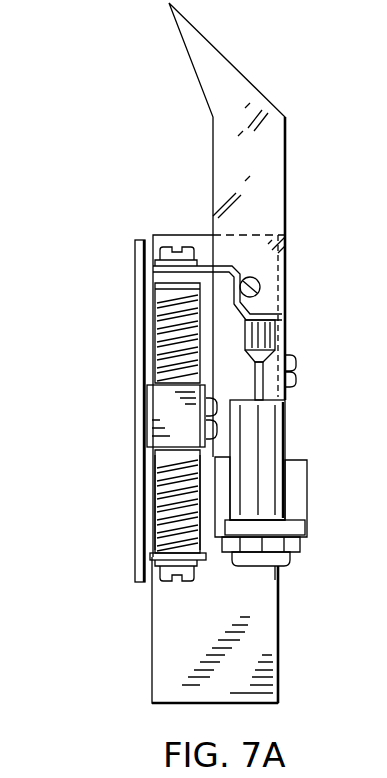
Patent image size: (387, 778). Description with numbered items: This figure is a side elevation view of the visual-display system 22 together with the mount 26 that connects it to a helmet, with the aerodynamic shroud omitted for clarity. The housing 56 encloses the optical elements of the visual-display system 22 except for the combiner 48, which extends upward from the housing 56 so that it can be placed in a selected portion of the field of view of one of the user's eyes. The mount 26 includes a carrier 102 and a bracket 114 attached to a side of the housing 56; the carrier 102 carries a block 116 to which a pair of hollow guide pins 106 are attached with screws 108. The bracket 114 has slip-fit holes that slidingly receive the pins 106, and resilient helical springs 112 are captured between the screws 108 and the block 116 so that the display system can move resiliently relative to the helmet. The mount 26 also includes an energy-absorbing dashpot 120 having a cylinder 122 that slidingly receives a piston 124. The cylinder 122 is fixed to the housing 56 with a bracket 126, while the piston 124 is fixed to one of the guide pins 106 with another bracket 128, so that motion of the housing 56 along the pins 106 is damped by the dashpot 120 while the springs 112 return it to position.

The visual-display system 22 is at (180, 226).
The mount 26 is at (133, 230).
The combiner 48 is at (242, 72).
The housing 56 is at (280, 683).
The carrier 102 is at (133, 447).
The hollow pins 106 is at (152, 540).
The screws 108 is at (168, 582).
The helical springs 112 is at (153, 513).
The bracket 114 is at (203, 557).
The block 116 is at (149, 405).
The dashpot 120 is at (283, 502).
The cylinder 122 is at (267, 422).
The piston 124 is at (281, 335).
The bracket 126 is at (307, 497).
The bracket 128 is at (262, 284).